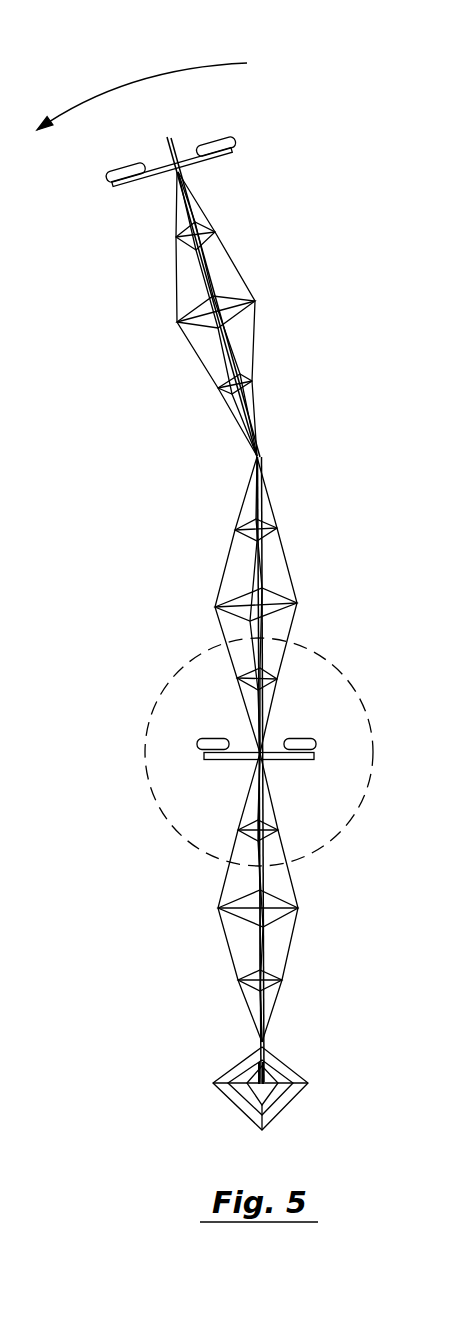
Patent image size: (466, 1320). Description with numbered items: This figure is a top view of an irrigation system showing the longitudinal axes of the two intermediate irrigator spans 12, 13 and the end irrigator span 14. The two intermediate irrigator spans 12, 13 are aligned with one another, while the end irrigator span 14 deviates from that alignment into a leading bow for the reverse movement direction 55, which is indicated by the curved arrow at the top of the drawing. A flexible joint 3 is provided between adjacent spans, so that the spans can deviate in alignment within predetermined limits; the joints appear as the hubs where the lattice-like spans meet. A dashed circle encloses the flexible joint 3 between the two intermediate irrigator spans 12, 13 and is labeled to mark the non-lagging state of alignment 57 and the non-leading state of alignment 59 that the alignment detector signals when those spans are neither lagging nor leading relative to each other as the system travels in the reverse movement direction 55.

The flexible joint 3 is at (258, 457).
The intermediate irrigator span 12 is at (287, 967).
The intermediate irrigator span 13 is at (288, 572).
The end irrigator span 14 is at (230, 345).
The reverse movement direction 55 is at (137, 82).
The non-lagging state of alignment 57 is at (230, 742).
The non-leading state of alignment 59 is at (158, 698).